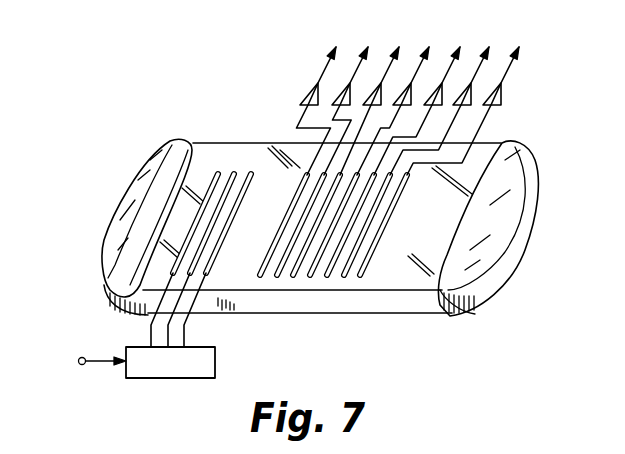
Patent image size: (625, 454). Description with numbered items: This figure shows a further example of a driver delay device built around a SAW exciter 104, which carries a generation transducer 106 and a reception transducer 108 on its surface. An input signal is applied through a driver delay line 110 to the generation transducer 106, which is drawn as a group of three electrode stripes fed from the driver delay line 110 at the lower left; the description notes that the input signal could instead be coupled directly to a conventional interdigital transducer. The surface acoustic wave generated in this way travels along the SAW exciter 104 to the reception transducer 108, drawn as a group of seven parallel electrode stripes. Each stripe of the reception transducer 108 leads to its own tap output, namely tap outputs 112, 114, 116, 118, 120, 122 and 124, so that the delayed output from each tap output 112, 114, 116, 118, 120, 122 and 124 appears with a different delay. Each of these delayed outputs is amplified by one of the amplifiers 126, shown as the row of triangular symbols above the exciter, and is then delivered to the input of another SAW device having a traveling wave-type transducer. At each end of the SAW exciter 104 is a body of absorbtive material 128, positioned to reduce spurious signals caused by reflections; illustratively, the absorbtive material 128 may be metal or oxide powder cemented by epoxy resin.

The SAW exciter 104 is at (381, 313).
The generation transducer 106 is at (223, 241).
The reception transducer 108 is at (383, 245).
The driver delay line 110 is at (215, 364).
The tap output 112 is at (321, 96).
The tap output 114 is at (351, 96).
The tap output 116 is at (375, 96).
The tap output 118 is at (398, 96).
The tap output 120 is at (423, 96).
The tap output 122 is at (447, 96).
The tap output 124 is at (475, 96).
The amplifiers 126 is at (318, 90).
The absorbtive material 128 is at (98, 246).